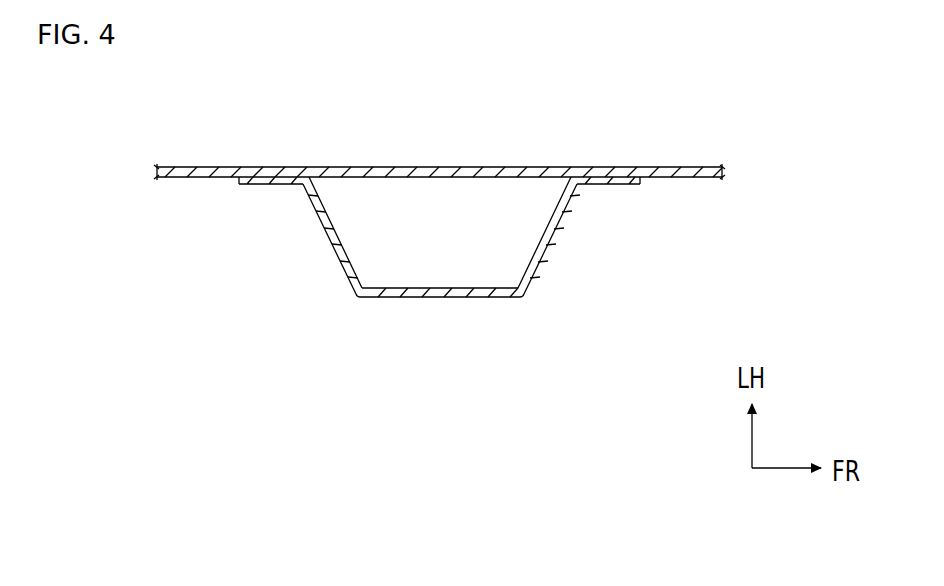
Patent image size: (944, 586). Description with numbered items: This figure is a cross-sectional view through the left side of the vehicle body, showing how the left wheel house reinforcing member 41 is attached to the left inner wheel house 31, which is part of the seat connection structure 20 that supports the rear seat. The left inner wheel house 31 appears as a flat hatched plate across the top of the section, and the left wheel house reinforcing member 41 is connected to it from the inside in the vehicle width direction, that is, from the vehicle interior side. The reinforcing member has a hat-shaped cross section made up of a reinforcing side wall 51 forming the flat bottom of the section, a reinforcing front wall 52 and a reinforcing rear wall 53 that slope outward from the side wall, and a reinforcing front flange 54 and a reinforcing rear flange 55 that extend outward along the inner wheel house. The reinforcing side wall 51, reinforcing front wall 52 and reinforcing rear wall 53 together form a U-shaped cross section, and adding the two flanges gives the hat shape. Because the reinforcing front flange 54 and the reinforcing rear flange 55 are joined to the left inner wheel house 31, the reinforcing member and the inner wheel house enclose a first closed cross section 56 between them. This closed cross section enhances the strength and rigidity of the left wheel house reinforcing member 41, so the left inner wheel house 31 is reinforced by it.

The seat connection structure 20 is at (440, 302).
The left inner wheel house 31 is at (447, 172).
The left wheel house reinforcing member 41 is at (447, 341).
The reinforcing side wall 51 is at (488, 297).
The reinforcing front wall 52 is at (548, 238).
The reinforcing rear wall 53 is at (342, 254).
The reinforcing front flange 54 is at (615, 186).
The reinforcing rear flange 55 is at (263, 184).
The first closed cross section 56 is at (376, 296).